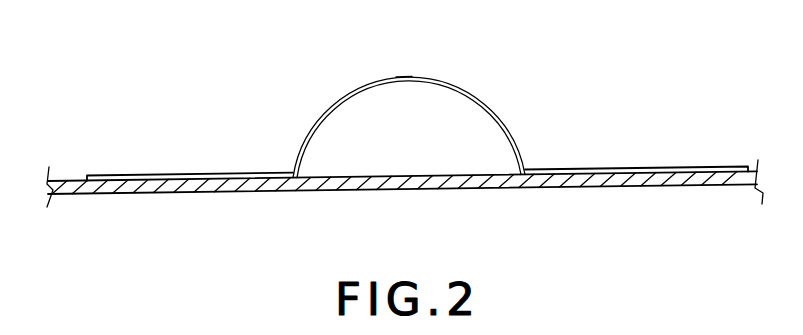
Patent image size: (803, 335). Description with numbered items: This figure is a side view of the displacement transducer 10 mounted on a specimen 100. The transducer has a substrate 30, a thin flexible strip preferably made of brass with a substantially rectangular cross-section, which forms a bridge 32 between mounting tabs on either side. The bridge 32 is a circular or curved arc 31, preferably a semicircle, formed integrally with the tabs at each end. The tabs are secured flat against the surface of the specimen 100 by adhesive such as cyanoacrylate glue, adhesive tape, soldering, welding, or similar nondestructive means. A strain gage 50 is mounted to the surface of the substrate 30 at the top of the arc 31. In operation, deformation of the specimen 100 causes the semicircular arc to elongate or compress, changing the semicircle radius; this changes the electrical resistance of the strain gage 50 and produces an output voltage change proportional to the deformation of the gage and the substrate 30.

The displacement transducer 10 is at (569, 82).
The substrate 30 is at (364, 106).
The curved arc 31 is at (308, 138).
The bridge 32 is at (453, 85).
The strain gage 50 is at (401, 76).
The specimen 100 is at (592, 188).